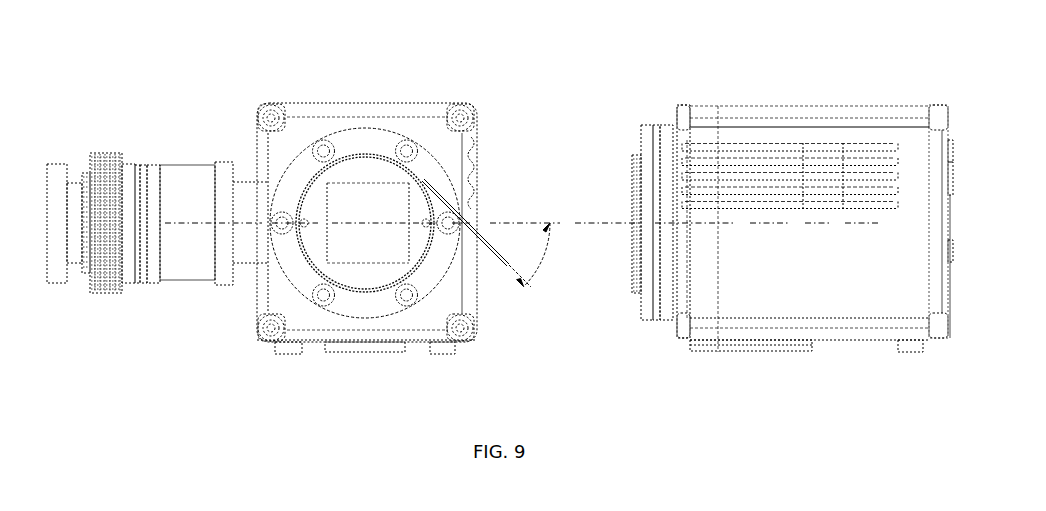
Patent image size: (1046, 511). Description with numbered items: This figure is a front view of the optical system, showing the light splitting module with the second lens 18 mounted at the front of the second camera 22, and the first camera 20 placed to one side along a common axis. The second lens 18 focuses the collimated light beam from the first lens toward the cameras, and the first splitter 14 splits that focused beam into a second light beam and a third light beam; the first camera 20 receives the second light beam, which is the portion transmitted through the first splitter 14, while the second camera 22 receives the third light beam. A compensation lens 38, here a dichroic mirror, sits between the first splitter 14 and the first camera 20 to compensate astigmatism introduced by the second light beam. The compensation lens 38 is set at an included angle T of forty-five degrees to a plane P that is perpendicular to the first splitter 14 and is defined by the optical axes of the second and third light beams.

The first splitter 14 is at (342, 194).
The second lens 18 is at (173, 177).
The first camera 20 is at (817, 308).
The second camera 22 is at (387, 112).
The compensation lens 38 is at (448, 193).
The plane P is at (592, 222).
The included angle T is at (531, 255).